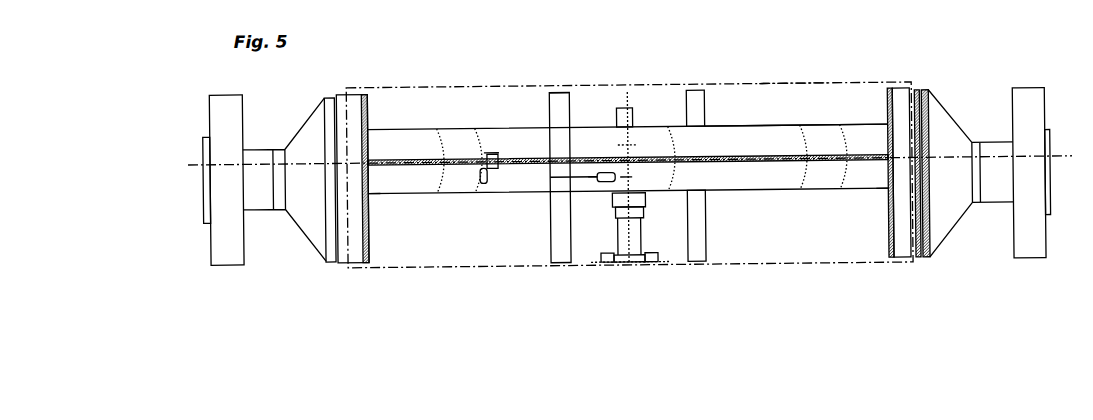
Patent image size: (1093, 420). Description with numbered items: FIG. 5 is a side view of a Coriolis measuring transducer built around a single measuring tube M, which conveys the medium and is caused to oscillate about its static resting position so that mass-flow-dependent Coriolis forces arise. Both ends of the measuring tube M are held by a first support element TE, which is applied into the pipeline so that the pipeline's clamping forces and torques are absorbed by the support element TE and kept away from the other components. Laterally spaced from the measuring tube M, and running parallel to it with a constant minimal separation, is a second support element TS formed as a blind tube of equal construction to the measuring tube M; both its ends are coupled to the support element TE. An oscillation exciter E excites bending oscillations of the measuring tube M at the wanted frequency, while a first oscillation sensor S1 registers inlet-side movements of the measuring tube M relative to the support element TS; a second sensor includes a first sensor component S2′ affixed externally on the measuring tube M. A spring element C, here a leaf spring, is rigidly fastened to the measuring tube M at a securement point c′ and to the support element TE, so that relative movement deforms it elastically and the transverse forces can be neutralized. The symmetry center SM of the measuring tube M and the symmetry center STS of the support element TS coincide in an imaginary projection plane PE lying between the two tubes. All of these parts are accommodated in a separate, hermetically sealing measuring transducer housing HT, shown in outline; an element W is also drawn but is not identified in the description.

The imaginary projection plane PE is at (630, 176).
The measuring transducer housing HT is at (435, 86).
The first support element TE is at (787, 93).
The second support element TS is at (731, 148).
The measuring tube M is at (729, 184).
The first oscillation sensor S1 is at (742, 115).
The first sensor component S2′ is at (493, 172).
The spring element C is at (580, 176).
The securement point c′ is at (608, 176).
The symmetry center of the measuring tube SM is at (632, 177).
The window W is at (630, 120).
The symmetry center of the support element STS is at (625, 145).
The oscillation exciter E is at (628, 210).